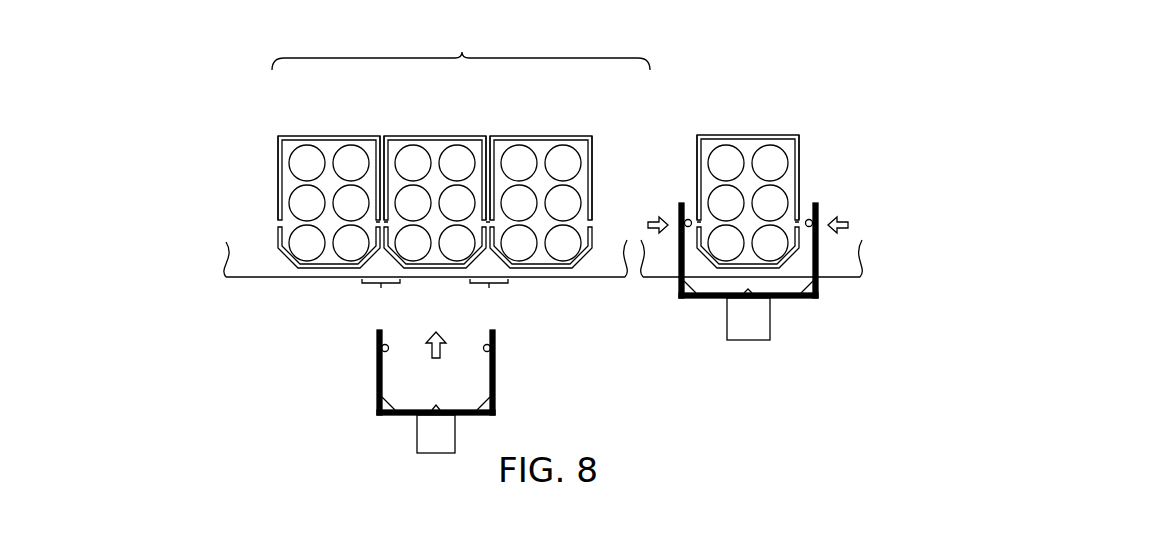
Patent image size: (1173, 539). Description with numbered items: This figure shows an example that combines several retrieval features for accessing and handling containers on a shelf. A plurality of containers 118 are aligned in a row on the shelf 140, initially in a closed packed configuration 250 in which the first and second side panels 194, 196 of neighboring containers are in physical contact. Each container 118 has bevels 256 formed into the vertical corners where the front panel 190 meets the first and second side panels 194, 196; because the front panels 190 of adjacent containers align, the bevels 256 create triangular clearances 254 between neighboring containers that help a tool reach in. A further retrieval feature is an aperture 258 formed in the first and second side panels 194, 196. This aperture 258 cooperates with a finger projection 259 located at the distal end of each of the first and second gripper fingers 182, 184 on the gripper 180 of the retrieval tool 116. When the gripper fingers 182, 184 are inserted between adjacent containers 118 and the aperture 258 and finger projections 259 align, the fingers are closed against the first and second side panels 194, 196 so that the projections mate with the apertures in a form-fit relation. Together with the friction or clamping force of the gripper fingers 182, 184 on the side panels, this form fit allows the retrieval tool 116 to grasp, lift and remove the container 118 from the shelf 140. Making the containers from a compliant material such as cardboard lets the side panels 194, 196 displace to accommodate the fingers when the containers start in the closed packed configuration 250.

The closed packed configuration 250 is at (462, 52).
The container 118 is at (287, 135).
The first side panel 194 is at (383, 135).
The second side panel 196 is at (697, 134).
The bevel 256 is at (279, 228).
The aperture 258 is at (360, 266).
The triangular clearance 254 is at (382, 288).
The front panel 190 is at (300, 278).
The shelf 140 is at (263, 266).
The retrieval tool 116 is at (481, 436).
The first gripper finger 182 is at (377, 398).
The second gripper finger 184 is at (495, 385).
The finger projection 259 is at (381, 350).
The gripper 180 is at (417, 428).